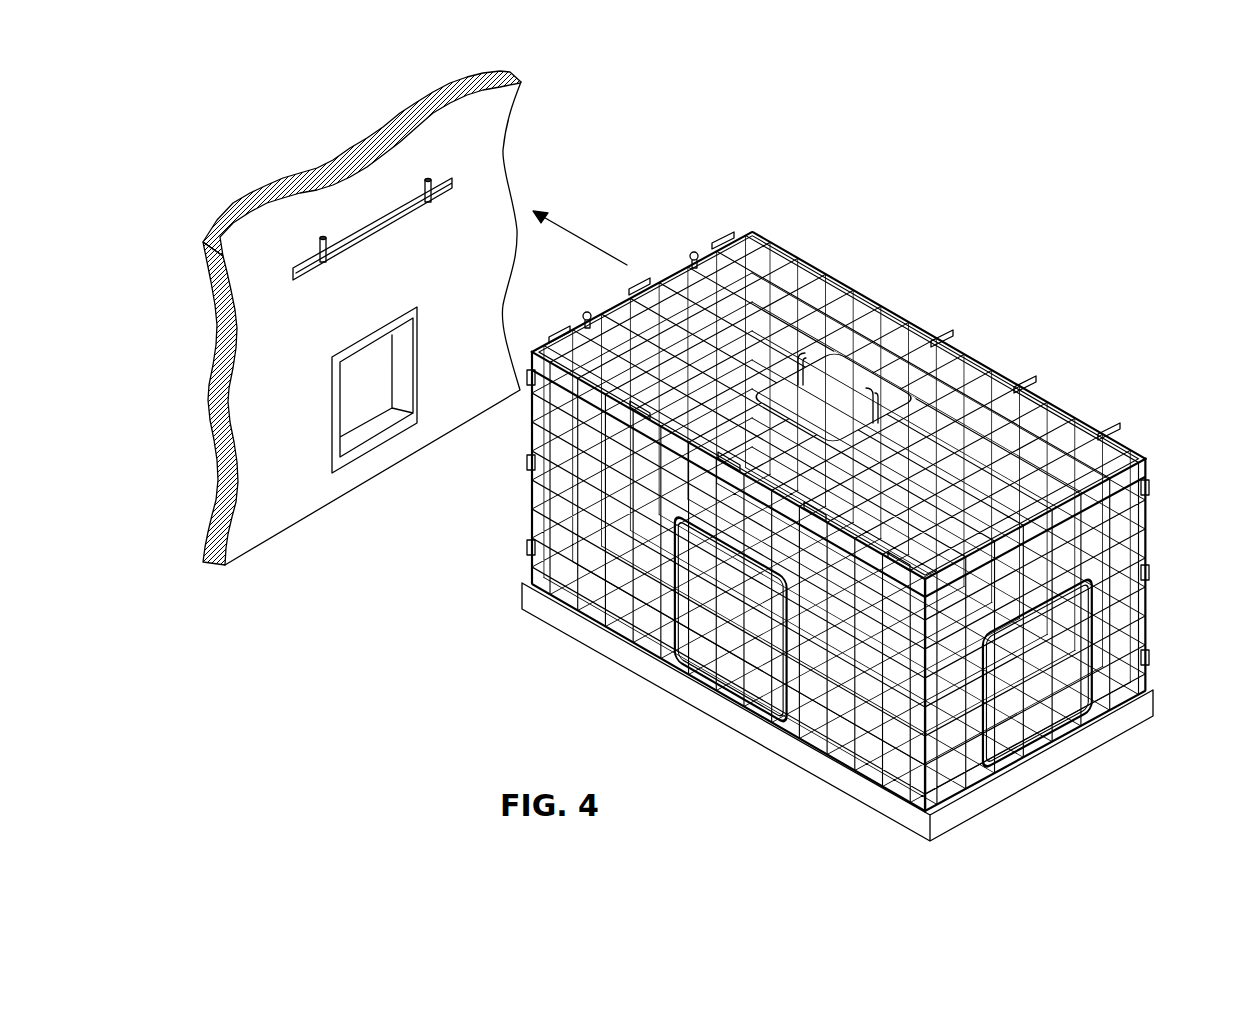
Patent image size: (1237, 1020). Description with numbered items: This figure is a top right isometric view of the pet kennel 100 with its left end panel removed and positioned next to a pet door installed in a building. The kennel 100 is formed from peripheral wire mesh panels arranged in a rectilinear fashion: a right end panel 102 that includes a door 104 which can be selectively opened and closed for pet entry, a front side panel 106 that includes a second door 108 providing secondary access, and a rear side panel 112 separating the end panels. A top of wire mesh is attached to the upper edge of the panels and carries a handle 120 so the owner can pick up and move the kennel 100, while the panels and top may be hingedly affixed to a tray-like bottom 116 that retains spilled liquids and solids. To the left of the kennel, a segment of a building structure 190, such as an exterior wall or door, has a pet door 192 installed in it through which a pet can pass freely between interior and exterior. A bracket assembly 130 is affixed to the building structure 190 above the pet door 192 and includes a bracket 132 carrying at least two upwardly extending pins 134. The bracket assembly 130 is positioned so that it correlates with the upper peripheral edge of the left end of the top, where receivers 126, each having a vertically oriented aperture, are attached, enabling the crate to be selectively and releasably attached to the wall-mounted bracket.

The pet kennel 100 is at (999, 270).
The right end panel 102 is at (1130, 605).
The door 104 is at (1035, 688).
The front side panel 106 is at (614, 590).
The door 108 is at (708, 632).
The rear side panel 112 is at (995, 360).
The bottom 116 is at (740, 735).
The handle 120 is at (850, 388).
The receiver 126 is at (587, 310).
The bracket assembly 130 is at (320, 278).
The bracket 132 is at (395, 233).
The pin 134 is at (425, 188).
The building structure 190 is at (514, 168).
The pet door 192 is at (332, 420).